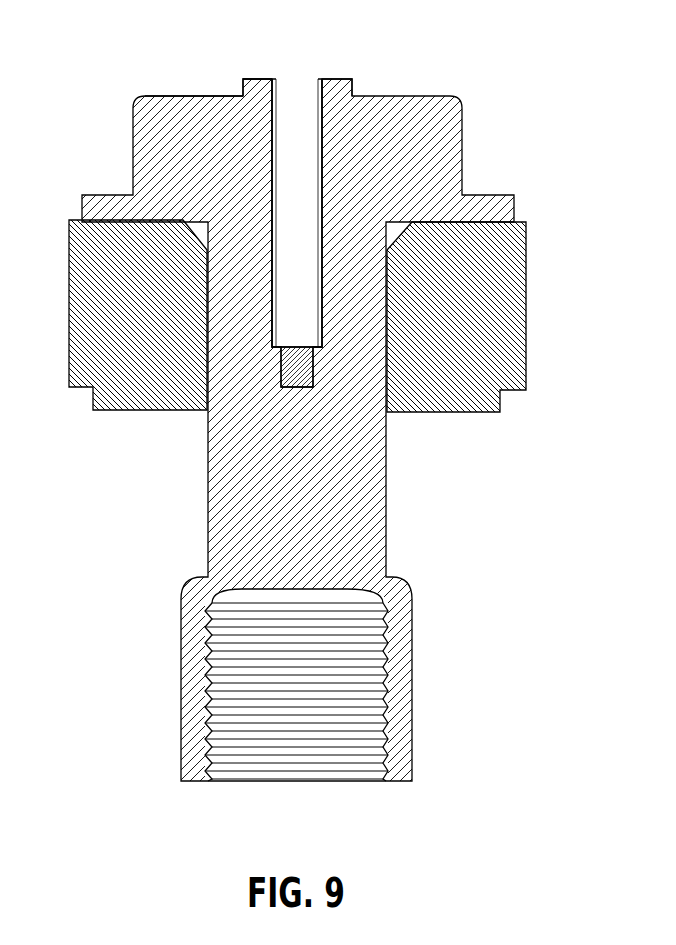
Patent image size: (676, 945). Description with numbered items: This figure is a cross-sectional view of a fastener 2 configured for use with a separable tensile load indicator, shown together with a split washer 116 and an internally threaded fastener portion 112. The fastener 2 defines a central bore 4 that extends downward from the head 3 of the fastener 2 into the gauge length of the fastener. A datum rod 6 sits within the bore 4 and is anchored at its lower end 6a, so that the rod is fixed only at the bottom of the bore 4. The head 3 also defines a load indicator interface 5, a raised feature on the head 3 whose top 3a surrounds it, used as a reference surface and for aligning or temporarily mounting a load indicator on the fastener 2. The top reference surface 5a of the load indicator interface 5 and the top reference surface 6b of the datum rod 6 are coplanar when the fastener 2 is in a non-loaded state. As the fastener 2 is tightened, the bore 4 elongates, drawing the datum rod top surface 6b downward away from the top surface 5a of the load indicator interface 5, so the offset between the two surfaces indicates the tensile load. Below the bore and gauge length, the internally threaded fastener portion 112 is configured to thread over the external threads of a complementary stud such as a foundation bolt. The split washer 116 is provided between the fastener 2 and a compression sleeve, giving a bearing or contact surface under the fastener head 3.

The fastener 2 is at (100, 163).
The head 3 is at (462, 147).
The top surface of fitting body 3a is at (170, 95).
The central bore 4 is at (273, 296).
The load indicator interface 5 is at (352, 88).
The top reference surface 5a is at (256, 79).
The datum rod 6 is at (295, 110).
The lower end 6a is at (300, 373).
The top reference surface 6b is at (300, 78).
The internally threaded fastener portion 112 is at (410, 712).
The split washer 116 is at (527, 315).